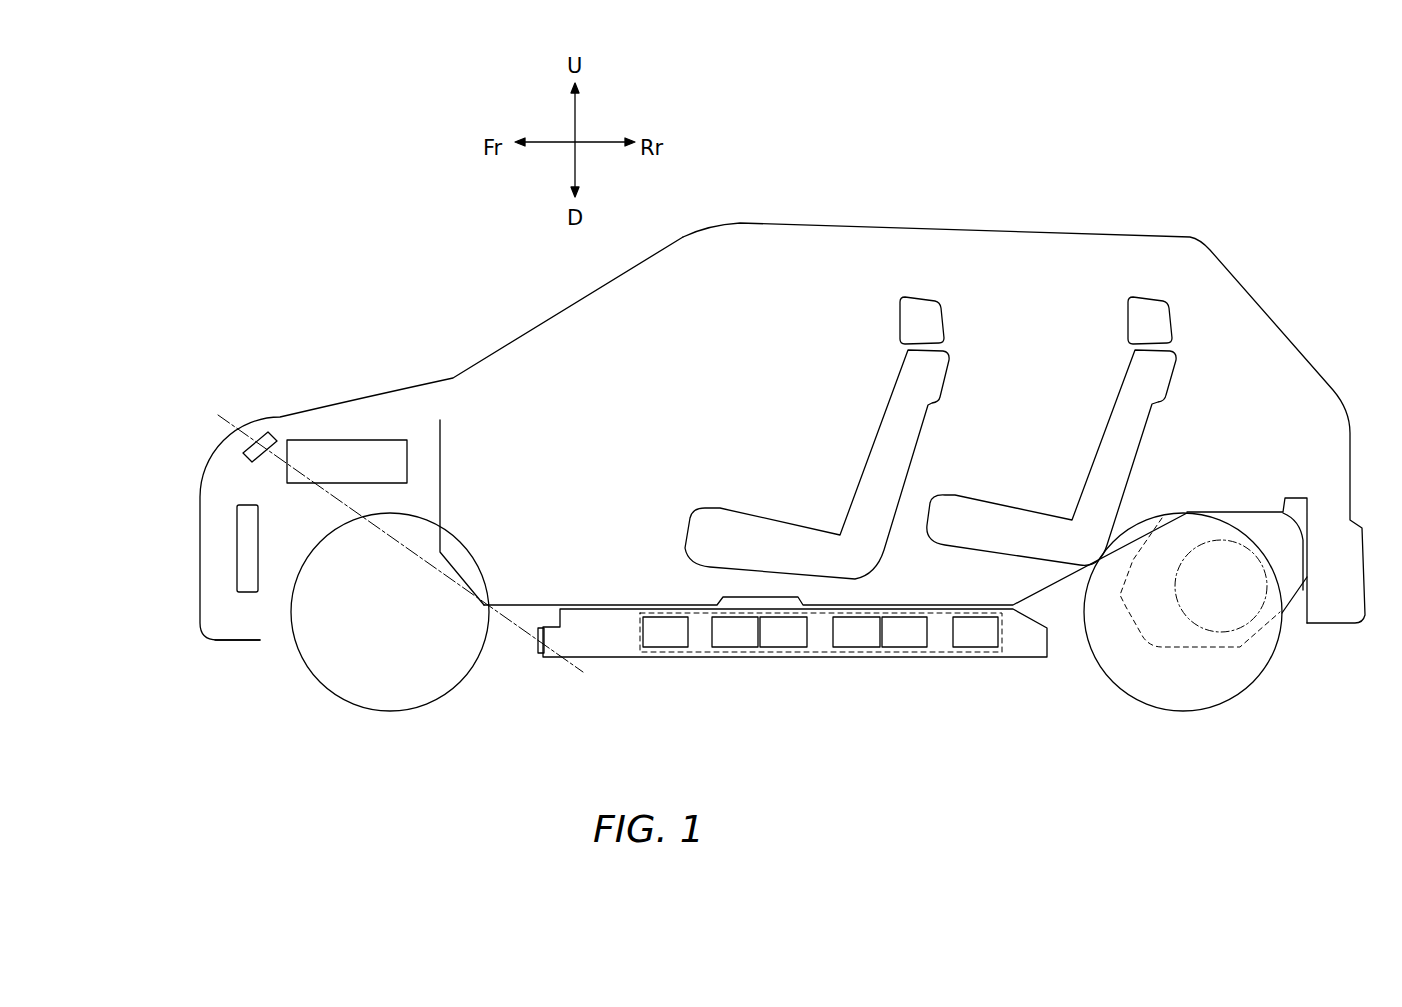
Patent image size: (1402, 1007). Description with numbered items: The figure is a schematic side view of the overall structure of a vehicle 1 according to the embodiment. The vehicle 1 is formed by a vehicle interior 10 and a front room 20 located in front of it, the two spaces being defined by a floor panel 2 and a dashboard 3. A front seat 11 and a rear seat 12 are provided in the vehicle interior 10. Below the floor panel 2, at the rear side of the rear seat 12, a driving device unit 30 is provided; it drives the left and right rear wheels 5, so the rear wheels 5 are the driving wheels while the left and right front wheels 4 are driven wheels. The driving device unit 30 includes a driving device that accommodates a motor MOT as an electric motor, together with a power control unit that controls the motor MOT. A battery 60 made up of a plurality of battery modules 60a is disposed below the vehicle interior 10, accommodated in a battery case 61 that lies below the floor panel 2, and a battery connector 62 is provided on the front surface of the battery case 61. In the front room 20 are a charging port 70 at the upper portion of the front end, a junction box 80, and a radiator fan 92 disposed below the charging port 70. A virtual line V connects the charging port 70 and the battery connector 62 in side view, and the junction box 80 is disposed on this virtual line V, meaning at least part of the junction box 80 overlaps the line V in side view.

The vehicle 1 is at (440, 228).
The floor panel 2 is at (543, 603).
The dashboard 3 is at (442, 457).
The front wheels 4 is at (473, 668).
The rear wheels 5 is at (1263, 668).
The vehicle interior 10 is at (784, 337).
The front seat 11 is at (883, 427).
The rear seat 12 is at (1117, 418).
The front room 20 is at (398, 427).
The driving device unit 30 is at (1293, 597).
The battery 60 is at (638, 627).
The battery modules 60a is at (898, 638).
The battery case 61 is at (935, 657).
The battery connector 62 is at (538, 640).
The charging port 70 is at (258, 430).
The junction box 80 is at (318, 452).
The radiator fan 92 is at (242, 552).
The motor MOT is at (1227, 632).
The virtual line V is at (387, 535).